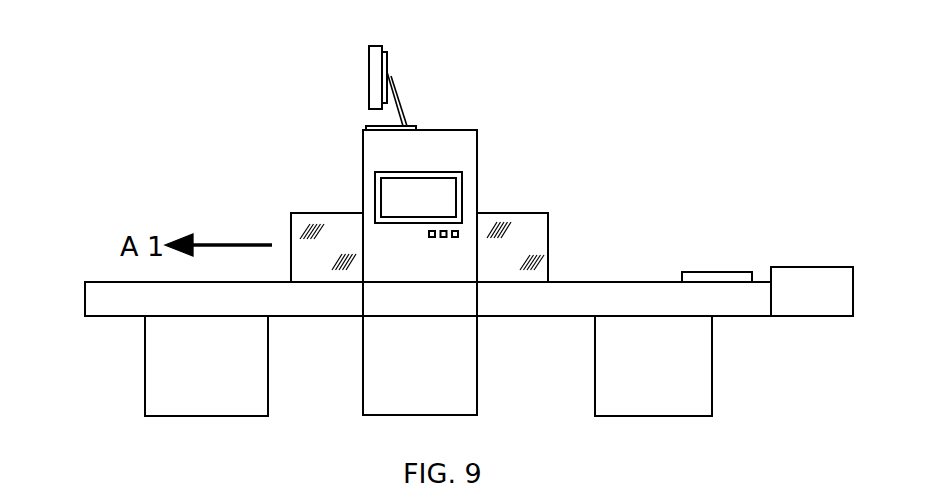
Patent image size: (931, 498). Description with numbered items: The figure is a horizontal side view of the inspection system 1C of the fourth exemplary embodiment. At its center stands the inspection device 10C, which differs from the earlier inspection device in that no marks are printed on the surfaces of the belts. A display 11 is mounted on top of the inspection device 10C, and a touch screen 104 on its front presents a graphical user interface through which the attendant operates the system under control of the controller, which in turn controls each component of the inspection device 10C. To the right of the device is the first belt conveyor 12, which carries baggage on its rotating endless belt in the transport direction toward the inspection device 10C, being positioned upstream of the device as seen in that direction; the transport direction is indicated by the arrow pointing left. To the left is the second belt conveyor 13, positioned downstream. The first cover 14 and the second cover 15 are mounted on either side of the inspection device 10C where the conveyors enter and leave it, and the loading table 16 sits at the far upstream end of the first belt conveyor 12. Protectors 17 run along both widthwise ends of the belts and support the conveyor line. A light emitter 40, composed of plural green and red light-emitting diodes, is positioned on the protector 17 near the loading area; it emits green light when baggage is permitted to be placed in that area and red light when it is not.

The inspection system 1C is at (670, 103).
The inspection device 10C is at (462, 142).
The display 11 is at (372, 82).
The touch screen 104 is at (389, 186).
The first belt conveyor 12 is at (614, 235).
The second belt conveyor 13 is at (90, 246).
The first cover 14 is at (525, 225).
The second cover 15 is at (293, 220).
The loading table 16 is at (838, 282).
The protector 17 is at (118, 308).
The light emitter 40 is at (705, 277).